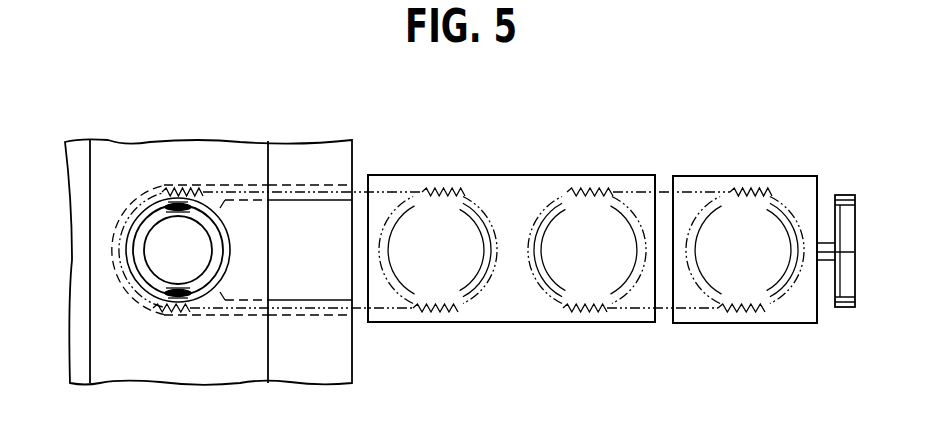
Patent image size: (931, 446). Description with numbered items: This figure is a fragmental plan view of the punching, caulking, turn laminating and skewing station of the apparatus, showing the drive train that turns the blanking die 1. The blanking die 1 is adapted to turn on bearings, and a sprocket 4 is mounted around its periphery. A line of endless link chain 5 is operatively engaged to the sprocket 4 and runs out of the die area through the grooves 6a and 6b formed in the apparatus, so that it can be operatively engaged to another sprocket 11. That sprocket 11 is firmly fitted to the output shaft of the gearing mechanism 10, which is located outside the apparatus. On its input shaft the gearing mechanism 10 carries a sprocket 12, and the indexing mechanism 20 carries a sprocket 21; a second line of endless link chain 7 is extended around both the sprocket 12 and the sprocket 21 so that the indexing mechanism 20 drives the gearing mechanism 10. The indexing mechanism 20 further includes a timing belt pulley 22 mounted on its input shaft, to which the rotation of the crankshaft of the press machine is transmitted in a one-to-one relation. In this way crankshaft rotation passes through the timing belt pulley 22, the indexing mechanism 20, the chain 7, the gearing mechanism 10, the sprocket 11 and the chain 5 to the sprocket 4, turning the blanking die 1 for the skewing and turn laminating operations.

The blanking die 1 is at (148, 280).
The sprocket 4 is at (165, 307).
The endless link chain 5 is at (257, 310).
The groove 6a is at (295, 185).
The groove 6b is at (295, 302).
The endless link chain 7 is at (662, 192).
The gearing mechanism 10 is at (528, 174).
The sprocket 11 is at (455, 190).
The sprocket 12 is at (590, 190).
The indexing mechanism 20 is at (728, 175).
The sprocket 21 is at (762, 198).
The timing belt pulley 22 is at (843, 195).